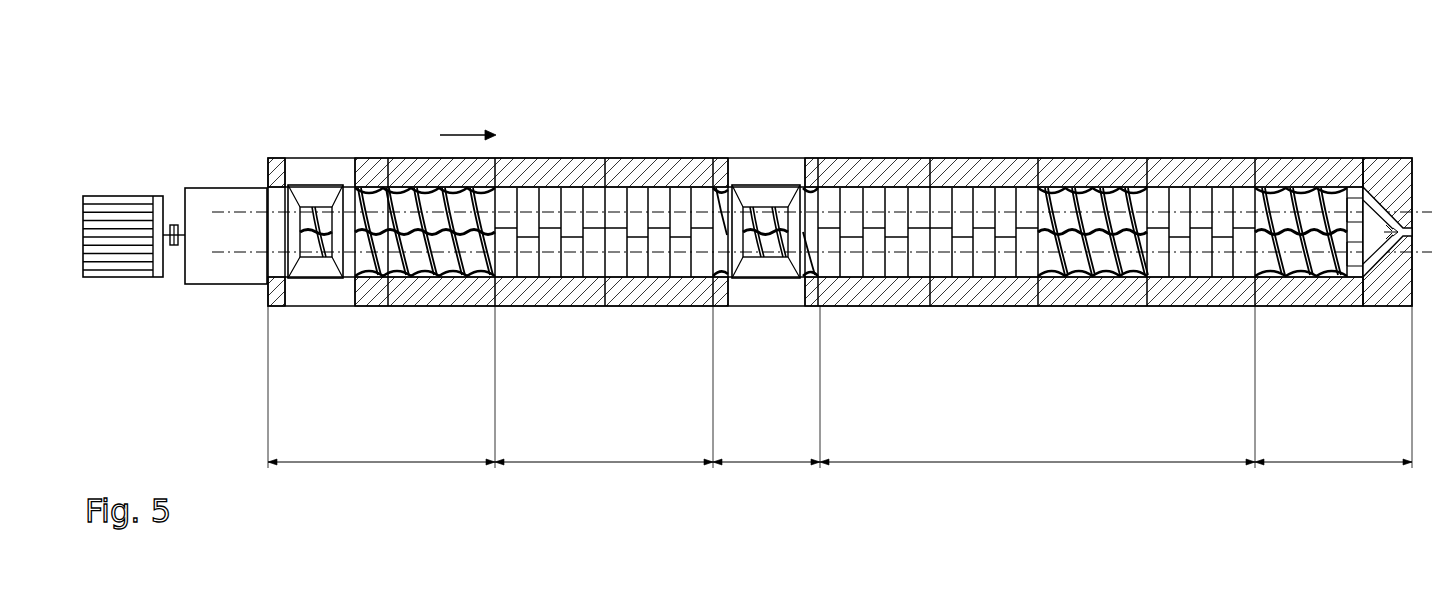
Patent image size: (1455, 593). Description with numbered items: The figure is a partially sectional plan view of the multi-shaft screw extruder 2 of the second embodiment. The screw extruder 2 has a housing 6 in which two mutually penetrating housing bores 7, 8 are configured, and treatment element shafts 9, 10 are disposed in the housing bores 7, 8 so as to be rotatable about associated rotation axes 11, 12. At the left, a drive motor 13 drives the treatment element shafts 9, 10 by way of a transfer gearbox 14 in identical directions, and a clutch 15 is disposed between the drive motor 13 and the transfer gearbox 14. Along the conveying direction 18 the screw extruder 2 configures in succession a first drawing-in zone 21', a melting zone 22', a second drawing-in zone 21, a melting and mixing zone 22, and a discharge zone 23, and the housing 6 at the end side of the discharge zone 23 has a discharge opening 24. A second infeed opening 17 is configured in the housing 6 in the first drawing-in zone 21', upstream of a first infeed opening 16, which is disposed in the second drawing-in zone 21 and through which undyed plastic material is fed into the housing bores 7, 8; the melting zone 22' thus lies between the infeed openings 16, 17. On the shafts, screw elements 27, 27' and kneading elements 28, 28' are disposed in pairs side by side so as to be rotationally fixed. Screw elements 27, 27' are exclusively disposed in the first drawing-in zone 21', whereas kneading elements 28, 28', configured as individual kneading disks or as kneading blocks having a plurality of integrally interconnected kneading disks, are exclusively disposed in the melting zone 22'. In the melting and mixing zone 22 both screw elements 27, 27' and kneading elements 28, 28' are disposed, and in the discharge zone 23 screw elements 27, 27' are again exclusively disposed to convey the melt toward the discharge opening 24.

The multi-shaft screw extruder 2 is at (535, 156).
The housing 6 is at (893, 156).
The housing bore 7 is at (1088, 268).
The housing bore 8 is at (1082, 195).
The treatment element shaft 9 is at (1113, 275).
The treatment element shaft 10 is at (1106, 192).
The rotation axis 11 is at (1178, 260).
The rotation axis 12 is at (1220, 200).
The drive motor 13 is at (110, 200).
The transfer gearbox 14 is at (212, 196).
The clutch 15 is at (170, 232).
The first infeed opening 16 is at (750, 262).
The second infeed opening 17 is at (308, 220).
The conveying direction 18 is at (467, 132).
The second drawing-in zone 21 is at (766, 387).
The first drawing-in zone 21' is at (381, 387).
The melting and mixing zone 22 is at (1037, 387).
The melting zone 22' is at (604, 387).
The discharge zone 23 is at (1333, 387).
The discharge opening 24 is at (1413, 232).
The screw element 27 is at (822, 291).
The screw element 27' is at (851, 166).
The kneading element 28 is at (808, 291).
The kneading element 28' is at (735, 167).